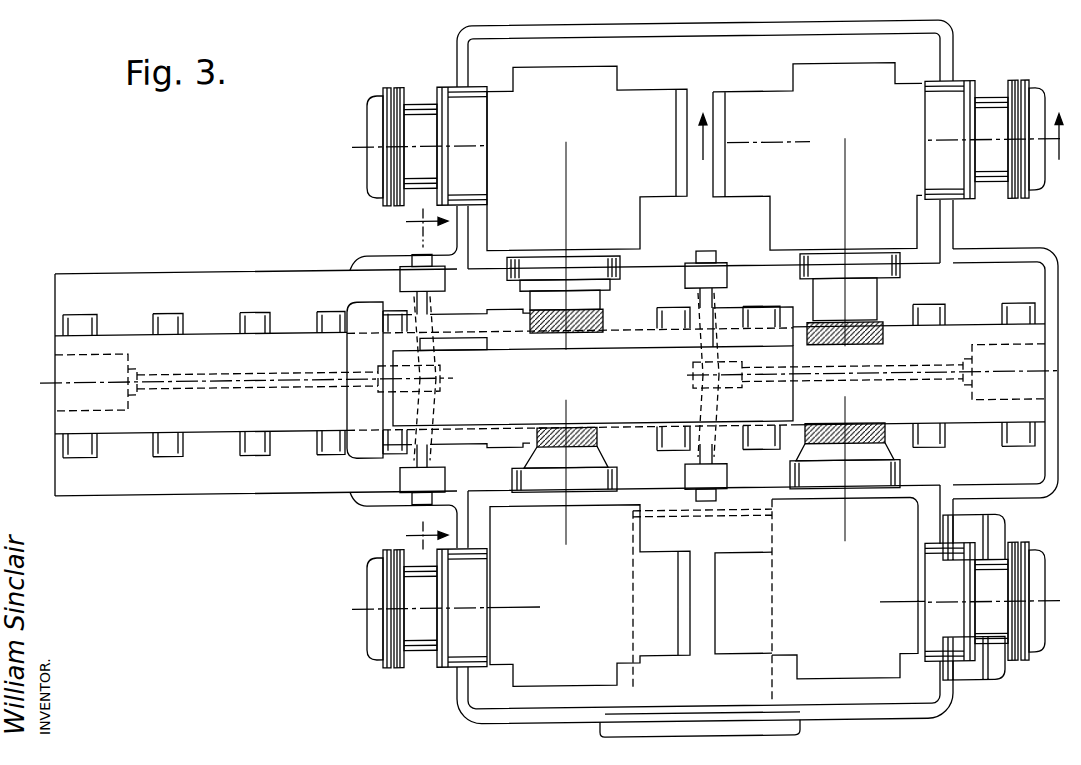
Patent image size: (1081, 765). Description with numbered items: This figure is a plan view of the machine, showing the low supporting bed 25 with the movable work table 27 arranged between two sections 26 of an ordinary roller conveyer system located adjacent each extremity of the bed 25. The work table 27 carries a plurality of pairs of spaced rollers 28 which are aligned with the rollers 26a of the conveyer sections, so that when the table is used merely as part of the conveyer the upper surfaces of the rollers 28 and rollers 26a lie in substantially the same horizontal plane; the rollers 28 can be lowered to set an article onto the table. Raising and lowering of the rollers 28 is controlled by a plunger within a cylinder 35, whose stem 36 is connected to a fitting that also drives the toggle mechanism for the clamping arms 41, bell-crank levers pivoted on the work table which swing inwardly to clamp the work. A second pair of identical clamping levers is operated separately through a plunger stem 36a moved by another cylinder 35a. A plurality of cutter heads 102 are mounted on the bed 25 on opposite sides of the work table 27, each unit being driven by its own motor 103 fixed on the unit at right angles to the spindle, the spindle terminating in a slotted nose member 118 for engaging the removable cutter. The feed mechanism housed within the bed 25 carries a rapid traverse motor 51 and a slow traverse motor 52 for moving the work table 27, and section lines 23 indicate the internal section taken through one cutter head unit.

The section line 23 is at (881, 123).
The bed 25 is at (1080, 476).
The conveyer sections 26 is at (152, 414).
The rollers of the conveyer system 26a is at (246, 308).
The work table 27 is at (500, 338).
The rollers 28 is at (547, 455).
The cylinder 35 is at (85, 350).
The cylinder 35a is at (990, 393).
The stem 36 is at (218, 372).
The plunger stem 36a is at (926, 362).
The clamping arms 41 is at (427, 302).
The rapid traverse motor 51 is at (995, 532).
The motor 52 is at (1005, 676).
The cutter heads 102 is at (742, 97).
The motor 103 is at (1068, 71).
The slotted nose member 118 is at (882, 458).